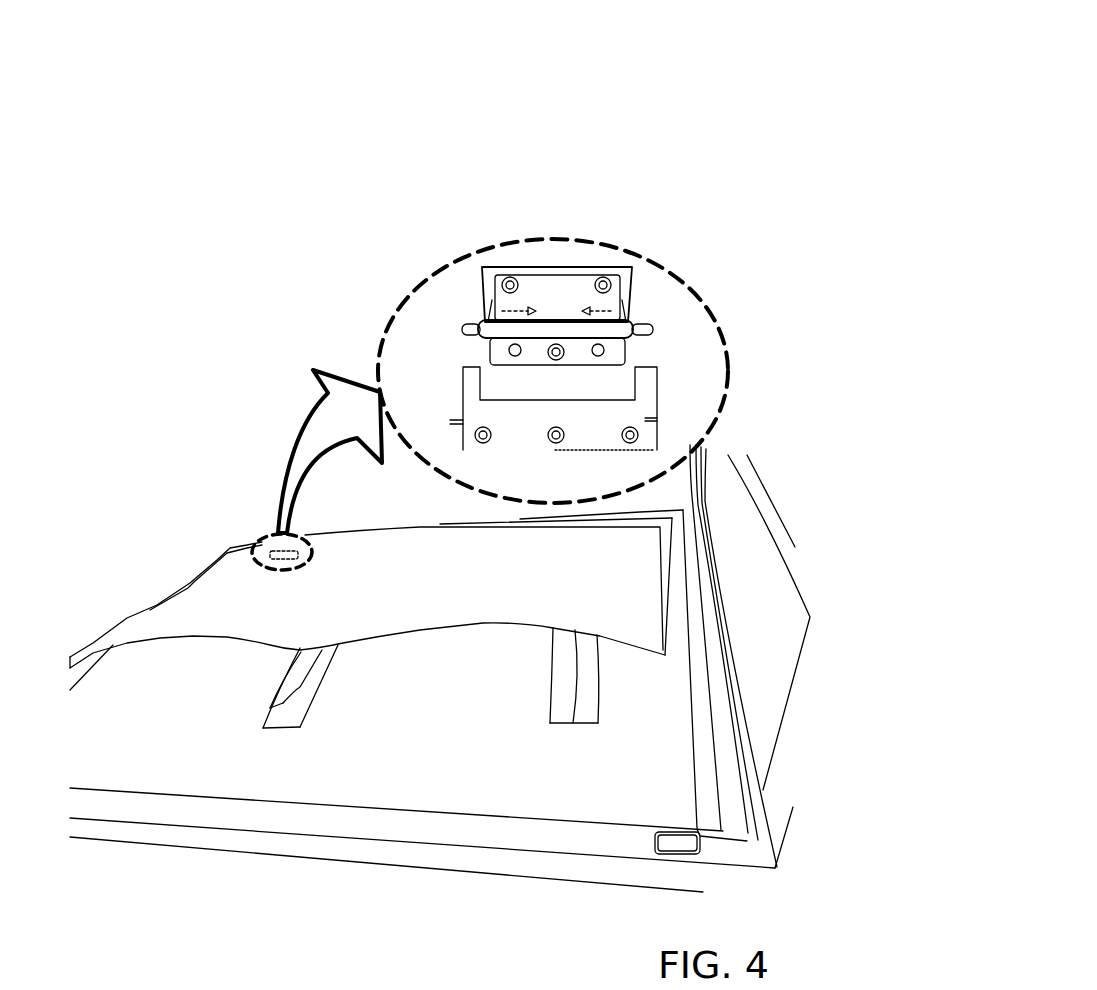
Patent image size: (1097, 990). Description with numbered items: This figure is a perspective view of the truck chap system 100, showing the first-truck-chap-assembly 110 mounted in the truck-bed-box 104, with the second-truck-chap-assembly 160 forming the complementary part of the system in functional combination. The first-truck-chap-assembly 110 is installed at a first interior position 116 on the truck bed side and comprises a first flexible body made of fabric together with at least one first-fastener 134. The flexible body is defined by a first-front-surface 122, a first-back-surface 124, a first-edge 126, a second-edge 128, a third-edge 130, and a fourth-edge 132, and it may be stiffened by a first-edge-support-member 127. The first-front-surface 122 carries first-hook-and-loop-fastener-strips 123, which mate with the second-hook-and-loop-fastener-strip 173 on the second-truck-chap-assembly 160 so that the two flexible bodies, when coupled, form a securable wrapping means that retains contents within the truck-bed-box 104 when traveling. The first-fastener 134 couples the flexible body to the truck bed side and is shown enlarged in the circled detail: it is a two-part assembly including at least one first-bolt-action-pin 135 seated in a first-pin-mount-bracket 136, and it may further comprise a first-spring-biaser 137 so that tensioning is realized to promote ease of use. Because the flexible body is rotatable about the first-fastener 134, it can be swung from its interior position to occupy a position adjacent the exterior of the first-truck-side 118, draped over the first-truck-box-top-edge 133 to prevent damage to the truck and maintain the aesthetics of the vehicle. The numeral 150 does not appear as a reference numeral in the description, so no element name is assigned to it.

The truck chap system 100 is at (629, 86).
The sunroof assembly 150 is at (651, 128).
The truck-bed-box 104 is at (632, 506).
The first-truck-chap-assembly 110 is at (532, 598).
The first interior position 116 is at (647, 517).
The first-truck-side 118 is at (230, 548).
The first-front-surface 122 is at (182, 640).
The first-hook-and-loop-fastener-strips 123 is at (314, 650).
The first-back-surface 124 is at (483, 576).
The first-edge 126 is at (378, 522).
The first-edge-support-member 127 is at (349, 545).
The second-edge 128 is at (160, 601).
The third-edge 130 is at (527, 632).
The fourth-edge 132 is at (674, 578).
The first-truck-box-top-edge 133 is at (241, 545).
The first-fastener 134 is at (556, 258).
The first-bolt-action-pin 135 is at (470, 318).
The first-pin-mount-bracket 136 is at (512, 416).
The first-spring-biaser 137 is at (568, 334).
The second-truck-chap-assembly 160 is at (190, 794).
The second-hook-and-loop-fastener-strip 173 is at (335, 620).